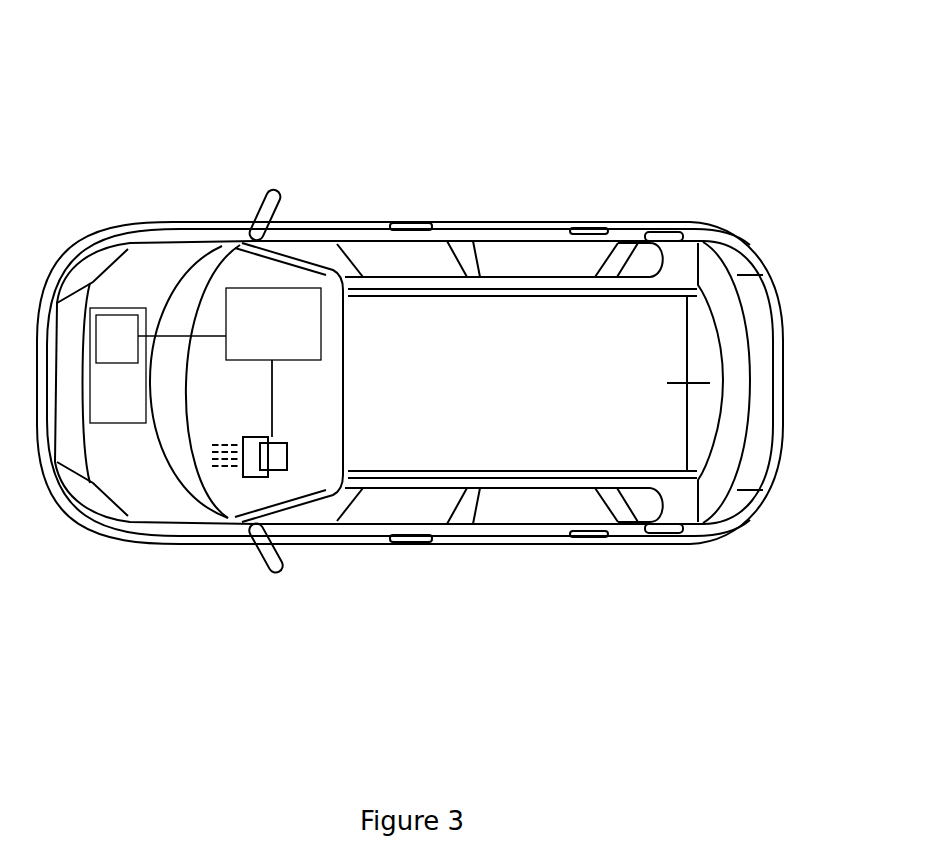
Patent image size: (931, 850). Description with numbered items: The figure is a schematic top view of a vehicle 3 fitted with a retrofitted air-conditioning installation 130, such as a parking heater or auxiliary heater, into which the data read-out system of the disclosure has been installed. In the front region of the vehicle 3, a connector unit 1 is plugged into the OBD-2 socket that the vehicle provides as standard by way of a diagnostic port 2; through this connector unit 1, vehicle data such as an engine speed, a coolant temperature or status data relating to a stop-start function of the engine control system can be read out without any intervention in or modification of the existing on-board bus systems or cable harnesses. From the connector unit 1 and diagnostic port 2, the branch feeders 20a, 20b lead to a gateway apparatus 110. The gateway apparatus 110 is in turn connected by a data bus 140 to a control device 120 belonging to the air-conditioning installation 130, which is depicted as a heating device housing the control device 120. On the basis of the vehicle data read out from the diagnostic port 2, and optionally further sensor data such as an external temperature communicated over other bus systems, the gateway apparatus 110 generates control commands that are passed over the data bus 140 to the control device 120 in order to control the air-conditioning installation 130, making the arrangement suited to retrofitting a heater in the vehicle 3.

The connector unit 1 is at (287, 457).
The diagnostic port 2 is at (258, 477).
The vehicle 3 is at (533, 71).
The gateway apparatus 110 is at (273, 324).
The control device 120 is at (117, 339).
The air-conditioning installation 130 is at (118, 365).
The data bus 140 is at (175, 335).
The branch feeder 20a is at (273, 402).
The branch feeder 20b is at (462, 363).